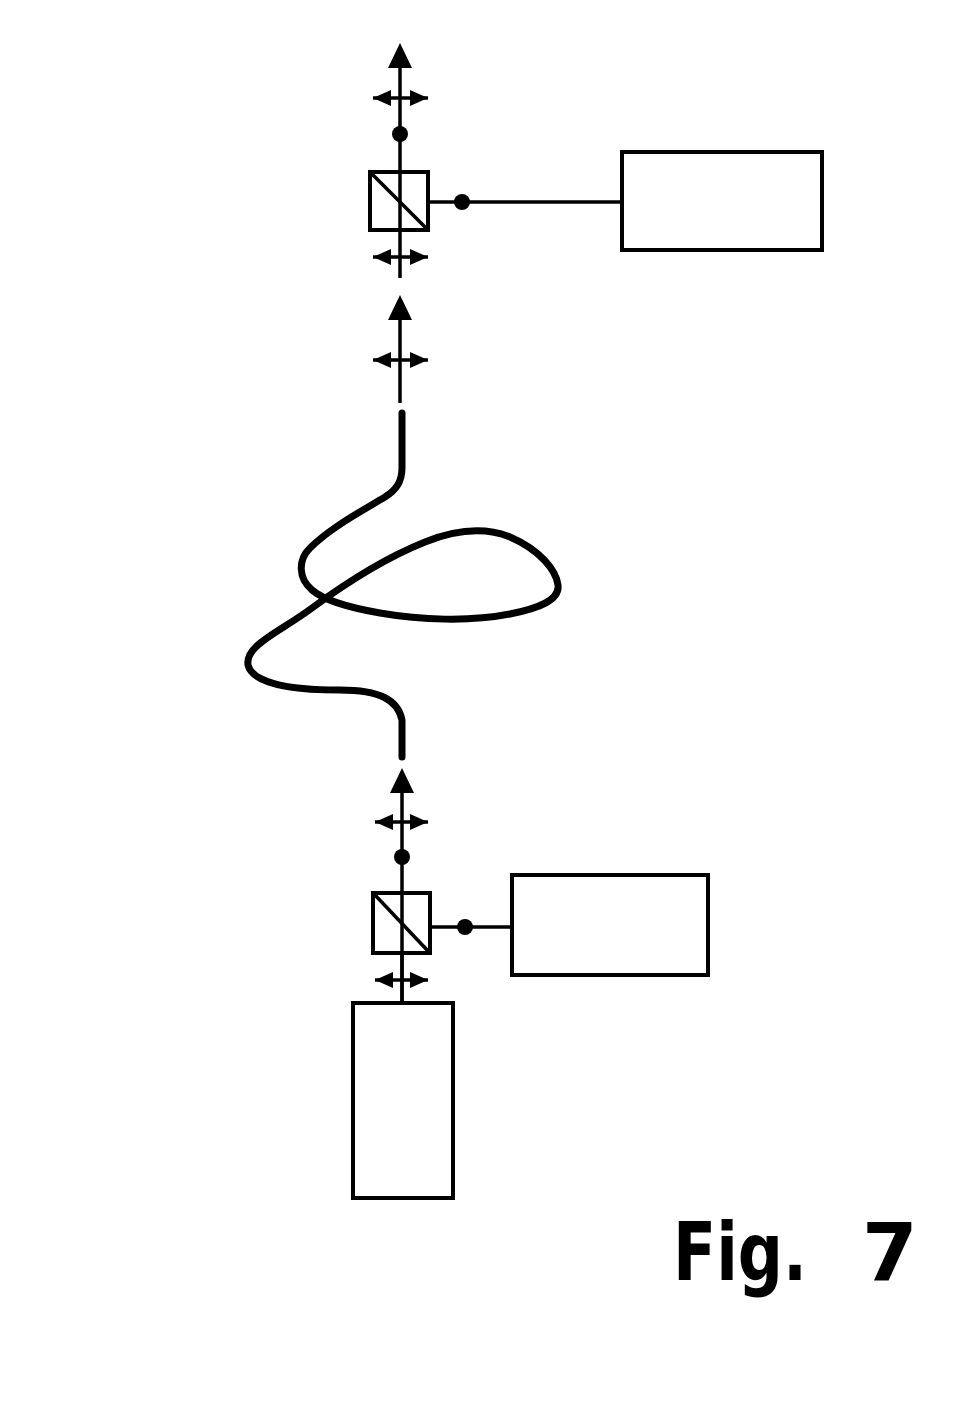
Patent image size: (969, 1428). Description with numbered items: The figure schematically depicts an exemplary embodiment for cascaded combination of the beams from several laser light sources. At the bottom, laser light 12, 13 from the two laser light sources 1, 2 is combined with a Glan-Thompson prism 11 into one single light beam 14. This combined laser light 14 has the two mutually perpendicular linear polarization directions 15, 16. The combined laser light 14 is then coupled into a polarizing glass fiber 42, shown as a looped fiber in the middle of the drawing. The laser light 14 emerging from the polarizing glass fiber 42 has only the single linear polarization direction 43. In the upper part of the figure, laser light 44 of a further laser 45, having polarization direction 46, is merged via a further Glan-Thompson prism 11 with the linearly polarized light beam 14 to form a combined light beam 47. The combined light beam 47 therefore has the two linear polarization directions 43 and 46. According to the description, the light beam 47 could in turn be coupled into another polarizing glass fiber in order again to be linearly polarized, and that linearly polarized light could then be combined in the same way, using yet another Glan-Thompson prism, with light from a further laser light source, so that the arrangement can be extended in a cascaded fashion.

The laser light source 1 is at (633, 947).
The laser light source 2 is at (422, 1118).
The Glan-Thompson prism 11 is at (390, 202).
The laser light 12 is at (485, 928).
The laser light 13 is at (382, 957).
The combined laser light 14 is at (397, 375).
The linear polarization direction 15 is at (398, 857).
The linear polarization direction 16 is at (377, 822).
The polarizing glass fiber 42 is at (540, 553).
The linear polarization direction 43 is at (375, 98).
The laser light 44 is at (569, 200).
The further laser 45 is at (758, 227).
The polarization direction 46 is at (395, 134).
The combined light beam 47 is at (405, 76).